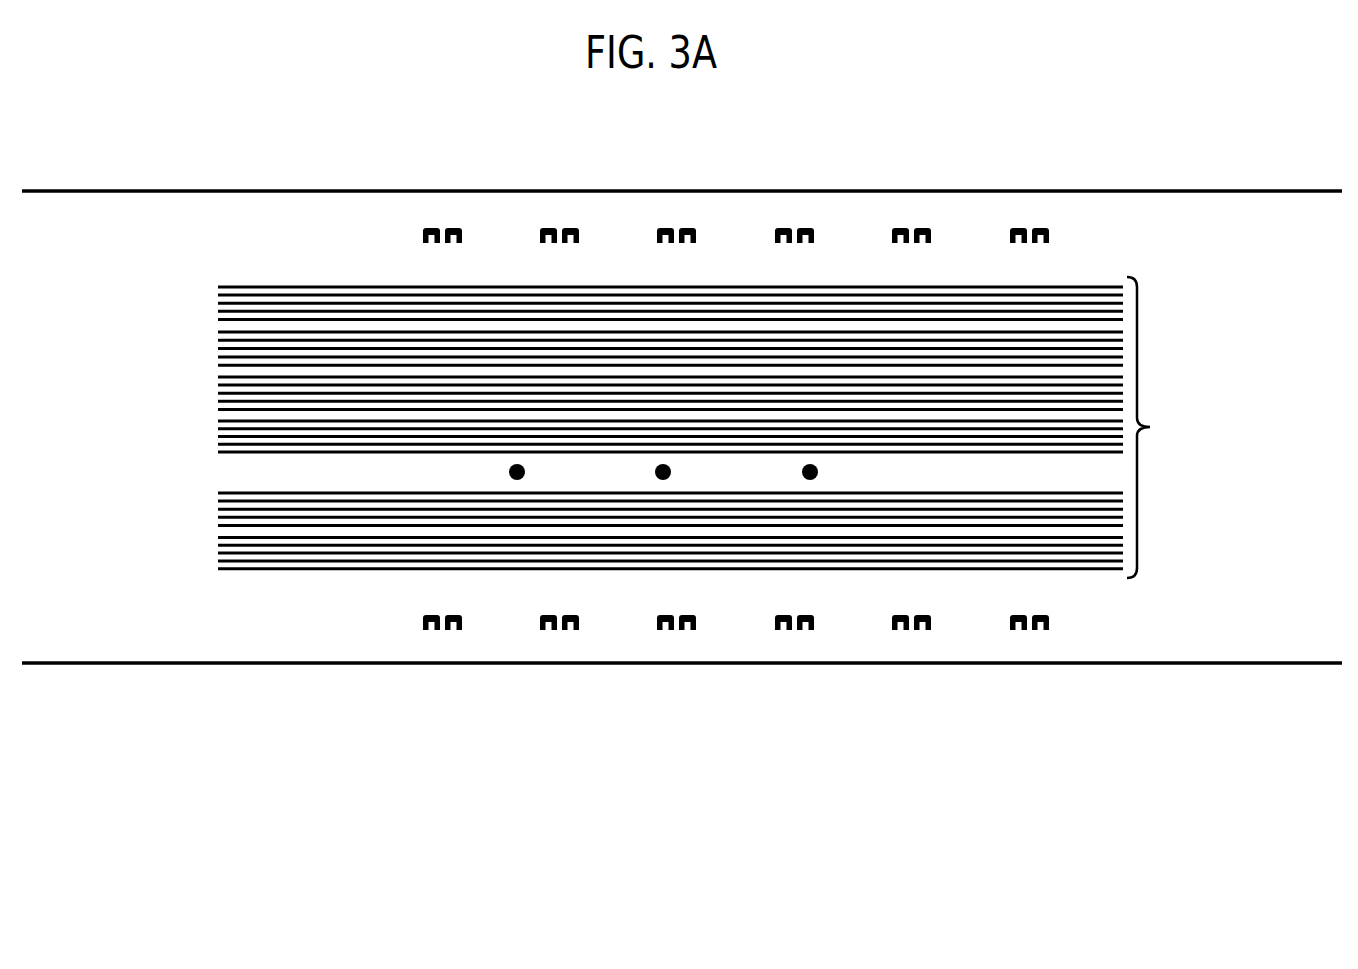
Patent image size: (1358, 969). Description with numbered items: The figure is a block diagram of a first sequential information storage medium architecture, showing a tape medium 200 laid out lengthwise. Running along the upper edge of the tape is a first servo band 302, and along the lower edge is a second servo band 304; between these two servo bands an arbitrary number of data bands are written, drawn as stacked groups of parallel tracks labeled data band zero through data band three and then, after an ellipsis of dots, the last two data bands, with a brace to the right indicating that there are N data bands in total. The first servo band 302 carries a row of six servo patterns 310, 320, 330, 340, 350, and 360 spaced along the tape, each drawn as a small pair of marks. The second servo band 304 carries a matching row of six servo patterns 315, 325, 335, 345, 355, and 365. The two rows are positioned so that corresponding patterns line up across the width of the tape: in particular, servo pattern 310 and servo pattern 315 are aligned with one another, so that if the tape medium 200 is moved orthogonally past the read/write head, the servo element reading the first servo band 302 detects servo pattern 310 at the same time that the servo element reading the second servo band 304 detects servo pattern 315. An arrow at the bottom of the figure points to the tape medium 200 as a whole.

The tape medium 200 is at (633, 800).
The first servo band 302 is at (682, 219).
The second servo band 304 is at (682, 637).
The servo pattern 310 is at (440, 222).
The servo pattern 320 is at (557, 222).
The servo pattern 330 is at (674, 222).
The servo pattern 340 is at (792, 222).
The servo pattern 350 is at (909, 222).
The servo pattern 360 is at (1027, 222).
The servo pattern 315 is at (433, 628).
The servo pattern 325 is at (550, 628).
The servo pattern 335 is at (667, 628).
The servo pattern 345 is at (785, 628).
The servo pattern 355 is at (902, 628).
The servo pattern 365 is at (1020, 628).